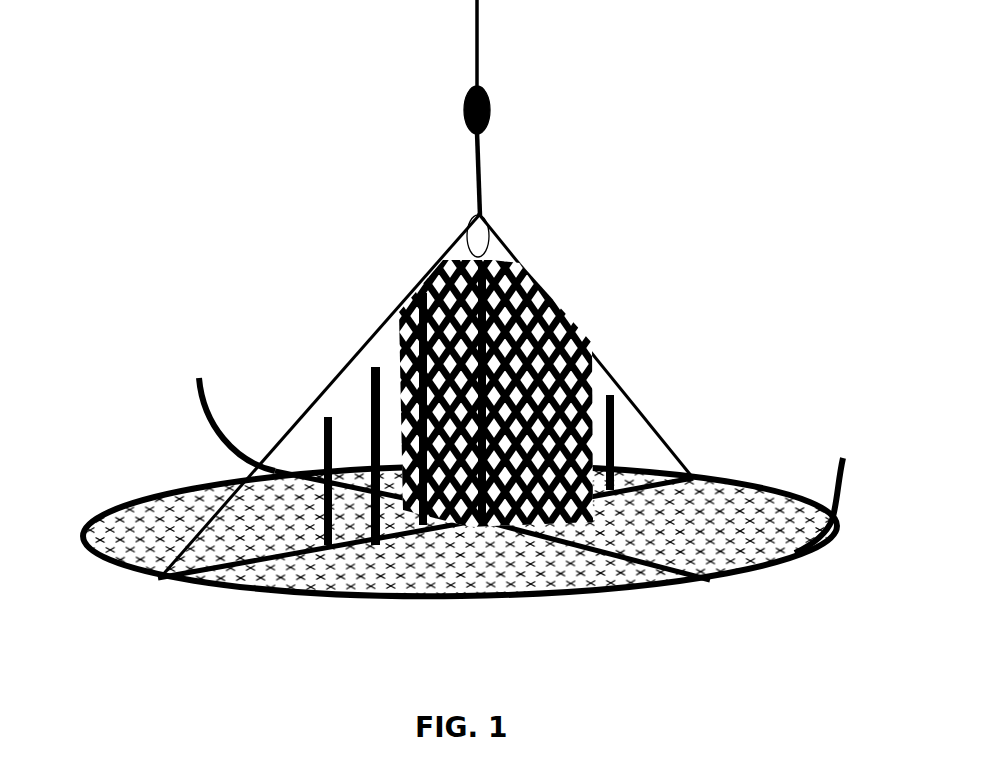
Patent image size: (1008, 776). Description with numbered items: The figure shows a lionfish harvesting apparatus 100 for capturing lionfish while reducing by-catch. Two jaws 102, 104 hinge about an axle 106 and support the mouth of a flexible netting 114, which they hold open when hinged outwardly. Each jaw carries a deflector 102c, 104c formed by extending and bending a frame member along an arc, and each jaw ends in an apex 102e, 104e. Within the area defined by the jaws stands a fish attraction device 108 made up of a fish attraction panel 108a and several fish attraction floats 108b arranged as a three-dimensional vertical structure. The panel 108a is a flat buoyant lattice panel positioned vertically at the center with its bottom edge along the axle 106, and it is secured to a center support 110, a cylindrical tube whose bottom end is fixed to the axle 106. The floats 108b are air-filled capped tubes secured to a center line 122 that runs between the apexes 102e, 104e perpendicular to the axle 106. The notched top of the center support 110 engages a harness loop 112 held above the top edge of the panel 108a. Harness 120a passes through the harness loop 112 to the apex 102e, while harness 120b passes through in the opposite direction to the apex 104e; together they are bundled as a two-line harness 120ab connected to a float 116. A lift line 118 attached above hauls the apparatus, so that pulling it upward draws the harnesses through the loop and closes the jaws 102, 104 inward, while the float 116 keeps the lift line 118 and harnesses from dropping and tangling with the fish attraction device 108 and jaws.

The lionfish harvesting apparatus 100 is at (318, 58).
The jaw 102 is at (845, 528).
The deflector 102c is at (199, 378).
The apex 102e is at (697, 477).
The jaw 104 is at (85, 538).
The deflector 104c is at (845, 458).
The apex 104e is at (150, 580).
The axle 106 is at (707, 582).
The fish attraction device 108 is at (508, 260).
The fish attraction panel 108a is at (577, 338).
The fish attraction floats 108b is at (365, 362).
The center support 110 is at (462, 247).
The harness loop 112 is at (495, 222).
The netting 114 is at (145, 505).
The float 116 is at (490, 100).
The lift line 118 is at (480, 40).
The harness 120a is at (613, 372).
The two-line harness 120ab is at (483, 168).
The harness 120b is at (378, 330).
The center line 122 is at (233, 567).